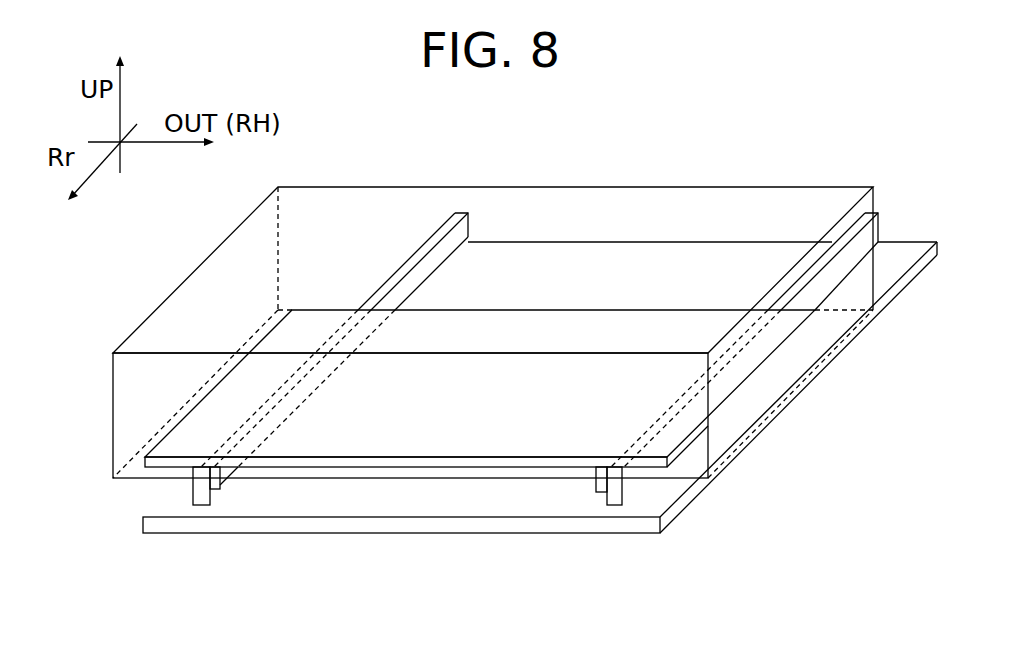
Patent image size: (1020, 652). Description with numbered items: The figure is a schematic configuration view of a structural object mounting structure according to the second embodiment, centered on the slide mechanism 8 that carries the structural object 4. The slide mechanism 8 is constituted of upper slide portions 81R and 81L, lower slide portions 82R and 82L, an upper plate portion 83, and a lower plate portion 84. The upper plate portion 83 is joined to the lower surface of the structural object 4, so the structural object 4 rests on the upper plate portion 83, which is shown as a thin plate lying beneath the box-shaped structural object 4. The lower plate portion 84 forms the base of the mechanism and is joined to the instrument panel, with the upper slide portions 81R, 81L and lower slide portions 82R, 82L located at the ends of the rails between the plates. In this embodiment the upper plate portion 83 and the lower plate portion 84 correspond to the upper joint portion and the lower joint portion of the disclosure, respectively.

The structural object 4 is at (275, 227).
The slide mechanism 8 is at (762, 447).
The upper slide portion 81L is at (245, 432).
The upper slide portion 81R is at (615, 498).
The lower slide portion 82L is at (195, 488).
The lower slide portion 82R is at (597, 481).
The upper plate portion 83 is at (550, 328).
The lower plate portion 84 is at (347, 515).